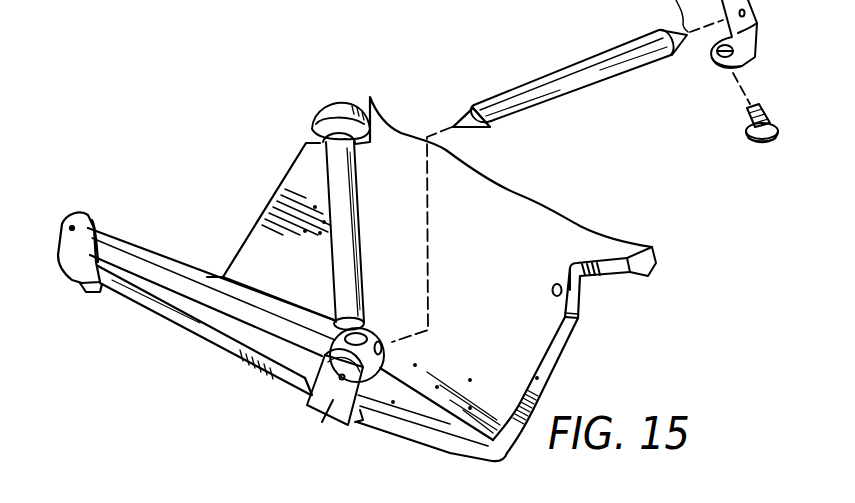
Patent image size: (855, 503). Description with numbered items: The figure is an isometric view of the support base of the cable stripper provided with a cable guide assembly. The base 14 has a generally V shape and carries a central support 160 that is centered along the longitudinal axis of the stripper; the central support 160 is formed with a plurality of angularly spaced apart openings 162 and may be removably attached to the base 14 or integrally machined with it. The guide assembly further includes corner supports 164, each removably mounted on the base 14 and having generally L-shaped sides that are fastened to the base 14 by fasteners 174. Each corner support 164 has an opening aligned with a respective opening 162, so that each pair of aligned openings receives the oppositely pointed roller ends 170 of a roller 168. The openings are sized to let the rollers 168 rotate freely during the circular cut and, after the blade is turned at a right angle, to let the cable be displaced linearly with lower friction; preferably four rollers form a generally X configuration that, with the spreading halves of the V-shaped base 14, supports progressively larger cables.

The base 14 is at (556, 241).
The central support 160 is at (385, 365).
The opening 162 is at (371, 334).
The corner support 164 is at (322, 422).
The roller 168 is at (602, 61).
The roller end 170 is at (463, 118).
The fastener 174 is at (746, 130).